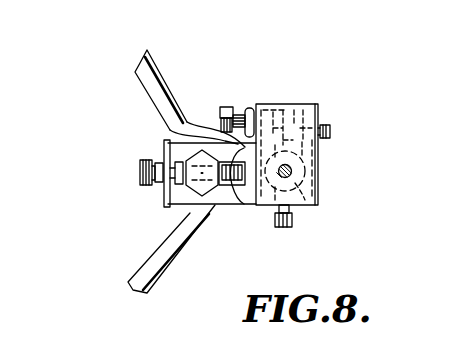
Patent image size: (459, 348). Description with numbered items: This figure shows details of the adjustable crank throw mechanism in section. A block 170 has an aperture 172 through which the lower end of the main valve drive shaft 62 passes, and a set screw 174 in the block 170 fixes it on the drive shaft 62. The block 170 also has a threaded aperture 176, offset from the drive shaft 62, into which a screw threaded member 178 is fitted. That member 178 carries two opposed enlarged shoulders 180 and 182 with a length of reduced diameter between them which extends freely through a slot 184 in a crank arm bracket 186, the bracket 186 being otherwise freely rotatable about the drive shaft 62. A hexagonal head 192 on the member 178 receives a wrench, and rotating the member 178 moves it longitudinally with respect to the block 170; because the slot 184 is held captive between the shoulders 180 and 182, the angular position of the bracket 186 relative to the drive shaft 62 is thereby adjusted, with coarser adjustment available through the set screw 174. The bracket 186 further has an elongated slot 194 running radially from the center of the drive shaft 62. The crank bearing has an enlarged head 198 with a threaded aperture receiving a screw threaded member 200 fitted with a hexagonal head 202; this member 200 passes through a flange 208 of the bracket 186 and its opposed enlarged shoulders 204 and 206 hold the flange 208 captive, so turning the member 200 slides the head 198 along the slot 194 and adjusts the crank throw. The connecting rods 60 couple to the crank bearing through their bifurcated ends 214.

The connecting rod 60 is at (142, 85).
The main valve drive shaft 62 is at (291, 172).
The block 170 is at (305, 212).
The aperture 172 is at (307, 178).
The set screw 174 is at (273, 228).
The threaded aperture 176 is at (290, 137).
The screw threaded member 178 is at (330, 132).
The enlarged shoulder 180 is at (250, 107).
The enlarged shoulder 182 is at (280, 147).
The slot 184 is at (257, 105).
The crank arm bracket 186 is at (242, 186).
The hexagonal head 192 is at (227, 106).
The elongated slot 194 is at (166, 136).
The enlarged head 198 is at (222, 190).
The screw threaded member 200 is at (230, 188).
The hexagonal head 202 is at (140, 180).
The enlarged shoulder 204 is at (163, 165).
The enlarged shoulder 206 is at (163, 150).
The flange 208 is at (163, 200).
The bifurcated end 214 is at (208, 127).